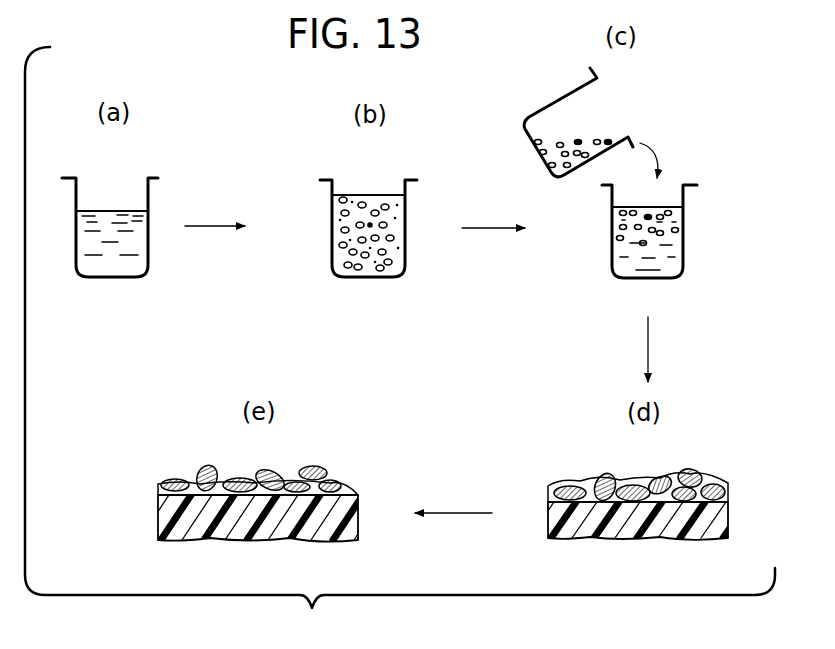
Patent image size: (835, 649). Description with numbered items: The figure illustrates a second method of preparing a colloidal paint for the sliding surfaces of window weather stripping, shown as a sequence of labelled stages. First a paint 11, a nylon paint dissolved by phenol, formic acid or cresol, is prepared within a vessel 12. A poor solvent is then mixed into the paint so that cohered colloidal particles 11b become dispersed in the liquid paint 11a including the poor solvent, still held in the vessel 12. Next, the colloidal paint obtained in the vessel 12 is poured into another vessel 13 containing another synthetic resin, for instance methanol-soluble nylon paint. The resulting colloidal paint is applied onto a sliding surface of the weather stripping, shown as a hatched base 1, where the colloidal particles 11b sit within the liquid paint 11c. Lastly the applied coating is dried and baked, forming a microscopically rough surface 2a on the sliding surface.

The substrate 1 is at (717, 518).
The microscopically rough surface 2a is at (273, 475).
The paint 11 is at (117, 210).
The liquid paint including poor solvent 11a is at (385, 195).
The colloidal particles 11b is at (393, 238).
The liquid paint 11c is at (663, 263).
The vessel 12 is at (75, 200).
The vessel 13 is at (684, 228).